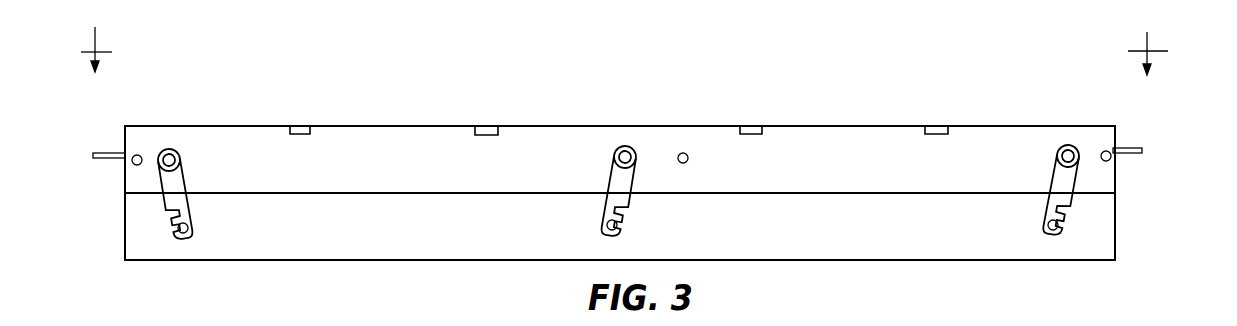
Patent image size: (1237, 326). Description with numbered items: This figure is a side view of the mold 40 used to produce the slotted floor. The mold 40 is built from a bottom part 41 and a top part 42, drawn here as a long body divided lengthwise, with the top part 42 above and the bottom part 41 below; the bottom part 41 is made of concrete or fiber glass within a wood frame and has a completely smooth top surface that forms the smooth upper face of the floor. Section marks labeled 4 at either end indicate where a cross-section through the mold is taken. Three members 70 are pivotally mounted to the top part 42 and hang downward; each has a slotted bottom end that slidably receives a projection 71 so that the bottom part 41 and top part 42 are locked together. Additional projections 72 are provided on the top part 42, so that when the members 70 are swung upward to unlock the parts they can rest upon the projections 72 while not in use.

The section line 4- 4 is at (622, 51).
The mold 40 is at (838, 76).
The bottom part 41 is at (1102, 227).
The top part 42 is at (1105, 180).
The members 70 is at (177, 180).
The projections 71 is at (174, 233).
The additional projections 72 is at (141, 155).